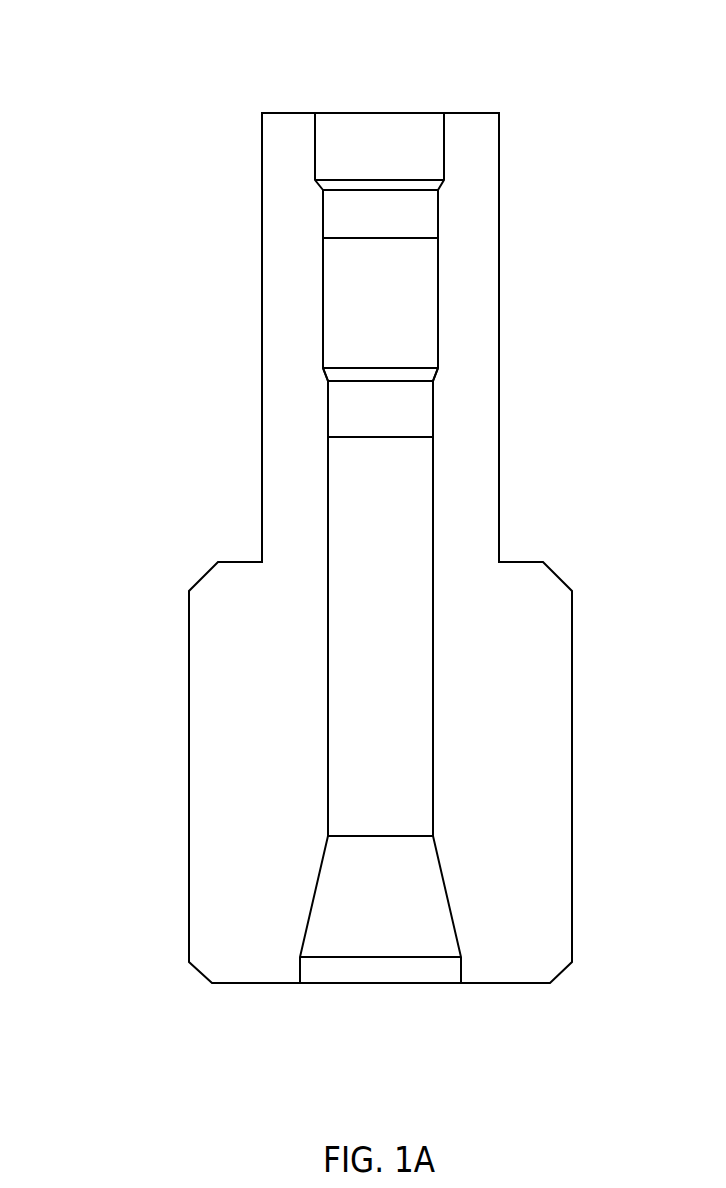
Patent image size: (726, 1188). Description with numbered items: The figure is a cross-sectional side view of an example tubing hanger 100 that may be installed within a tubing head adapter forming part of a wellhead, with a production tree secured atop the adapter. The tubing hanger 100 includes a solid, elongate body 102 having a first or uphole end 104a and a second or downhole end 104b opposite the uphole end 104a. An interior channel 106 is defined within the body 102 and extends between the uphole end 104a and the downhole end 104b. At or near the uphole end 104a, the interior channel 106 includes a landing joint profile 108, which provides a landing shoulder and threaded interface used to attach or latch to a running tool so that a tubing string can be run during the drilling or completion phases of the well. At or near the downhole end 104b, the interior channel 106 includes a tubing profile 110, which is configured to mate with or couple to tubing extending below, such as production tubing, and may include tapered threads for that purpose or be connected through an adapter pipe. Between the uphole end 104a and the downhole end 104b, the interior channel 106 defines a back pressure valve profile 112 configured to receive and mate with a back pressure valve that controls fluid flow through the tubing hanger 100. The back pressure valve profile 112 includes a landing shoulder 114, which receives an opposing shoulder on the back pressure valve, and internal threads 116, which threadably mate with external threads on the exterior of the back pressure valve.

The tubing hanger 100 is at (120, 55).
The body 102 is at (498, 404).
The uphole end 104a is at (503, 119).
The downhole end 104b is at (207, 982).
The interior channel 106 is at (433, 523).
The landing joint profile 108 is at (407, 188).
The tubing profile 110 is at (420, 993).
The back pressure valve profile 112 is at (327, 408).
The landing shoulder 114 is at (428, 377).
The internal threads 116 is at (332, 430).